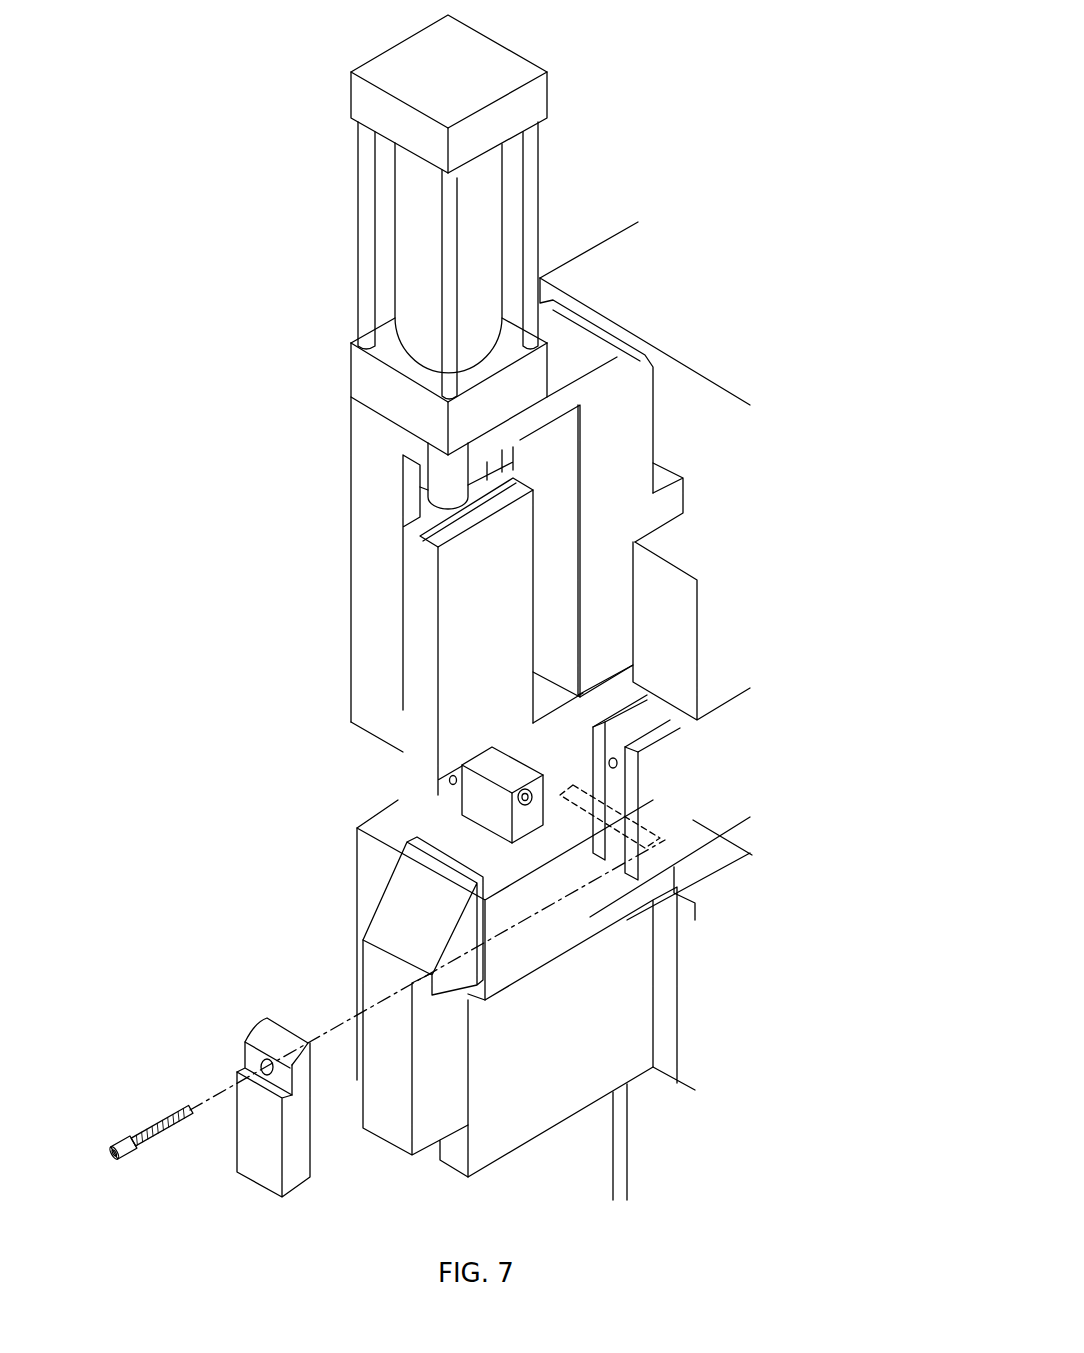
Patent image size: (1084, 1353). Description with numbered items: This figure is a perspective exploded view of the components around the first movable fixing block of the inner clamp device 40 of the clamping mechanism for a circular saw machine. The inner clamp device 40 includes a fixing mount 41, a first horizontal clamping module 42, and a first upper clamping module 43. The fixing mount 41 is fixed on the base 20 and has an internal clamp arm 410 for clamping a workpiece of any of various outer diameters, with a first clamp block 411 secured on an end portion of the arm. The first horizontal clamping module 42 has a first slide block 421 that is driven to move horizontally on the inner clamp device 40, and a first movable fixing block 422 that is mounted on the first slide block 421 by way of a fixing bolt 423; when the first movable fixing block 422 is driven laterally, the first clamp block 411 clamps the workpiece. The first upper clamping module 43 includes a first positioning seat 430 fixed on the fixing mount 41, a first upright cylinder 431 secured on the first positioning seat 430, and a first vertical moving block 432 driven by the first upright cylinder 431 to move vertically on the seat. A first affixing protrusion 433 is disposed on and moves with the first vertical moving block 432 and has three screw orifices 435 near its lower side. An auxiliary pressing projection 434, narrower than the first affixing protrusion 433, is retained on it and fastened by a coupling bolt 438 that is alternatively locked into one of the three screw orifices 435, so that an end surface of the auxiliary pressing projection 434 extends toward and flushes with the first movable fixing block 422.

The base 20 is at (620, 1112).
The inner clamp device 40 is at (712, 262).
The fixing mount 41 is at (622, 257).
The first horizontal clamping module 42 is at (795, 745).
The first upper clamping module 43 is at (300, 440).
The internal clamp arm 410 is at (557, 955).
The first clamp block 411 is at (390, 925).
The first slide block 421 is at (700, 823).
The first movable fixing block 422 is at (300, 1155).
The fixing bolt 423 is at (153, 1133).
The first positioning seat 430 is at (355, 472).
The first upright cylinder 431 is at (410, 228).
The first vertical moving block 432 is at (420, 513).
The first affixing protrusion 433 is at (425, 597).
The auxiliary pressing projection 434 is at (477, 807).
The screw orifices 435 is at (450, 780).
The coupling bolt 438 is at (530, 790).